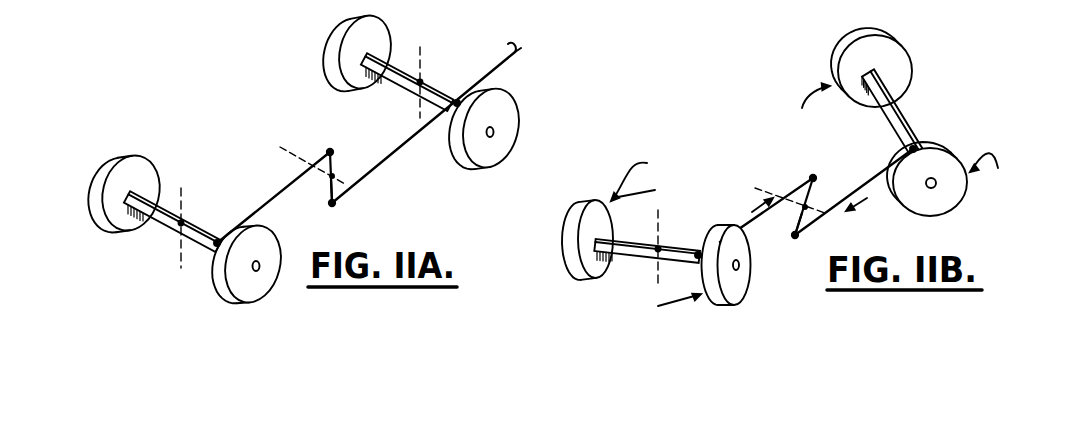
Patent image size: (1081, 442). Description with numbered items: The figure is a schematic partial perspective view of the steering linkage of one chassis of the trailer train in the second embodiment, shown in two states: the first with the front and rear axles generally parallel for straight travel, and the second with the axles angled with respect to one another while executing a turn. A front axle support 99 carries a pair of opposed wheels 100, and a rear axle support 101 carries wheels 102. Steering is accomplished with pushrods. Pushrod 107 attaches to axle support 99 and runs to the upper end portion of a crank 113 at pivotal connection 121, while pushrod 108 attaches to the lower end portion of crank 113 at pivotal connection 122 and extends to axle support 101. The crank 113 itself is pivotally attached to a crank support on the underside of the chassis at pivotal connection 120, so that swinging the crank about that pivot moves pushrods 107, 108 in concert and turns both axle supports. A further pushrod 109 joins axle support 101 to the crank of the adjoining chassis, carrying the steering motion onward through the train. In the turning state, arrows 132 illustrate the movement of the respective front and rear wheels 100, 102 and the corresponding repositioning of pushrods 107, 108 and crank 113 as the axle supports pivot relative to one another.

In FIG. 11A, the axle support 99 is at (168, 226).
In FIG. 11B, the axle support 99 is at (639, 256).
In FIG. 11A, the wheels 100 is at (113, 222).
In FIG. 11B, the wheels 100 is at (585, 208).
In FIG. 11A, the axle support 101 is at (412, 67).
In FIG. 11B, the axle support 101 is at (903, 116).
In FIG. 11A, the wheels 102 is at (348, 21).
In FIG. 11B, the wheels 102 is at (900, 54).
In FIG. 11A, the pushrod 107 is at (287, 188).
In FIG. 11B, the pushrod 107 is at (805, 183).
In FIG. 11A, the pushrod 108 is at (379, 164).
In FIG. 11B, the pushrod 108 is at (883, 173).
In FIG. 11A, the pushrod 109 is at (496, 68).
In FIG. 11A, the crank 113 is at (328, 190).
In FIG. 11B, the crank 113 is at (790, 220).
In FIG. 11A, the pivotal connection 120 is at (336, 172).
In FIG. 11B, the pivotal connection 120 is at (812, 176).
In FIG. 11A, the pivotal connection 121 is at (330, 150).
In FIG. 11A, the pivotal connection 122 is at (333, 206).
In FIG. 11B, the arrows 132 is at (812, 87).